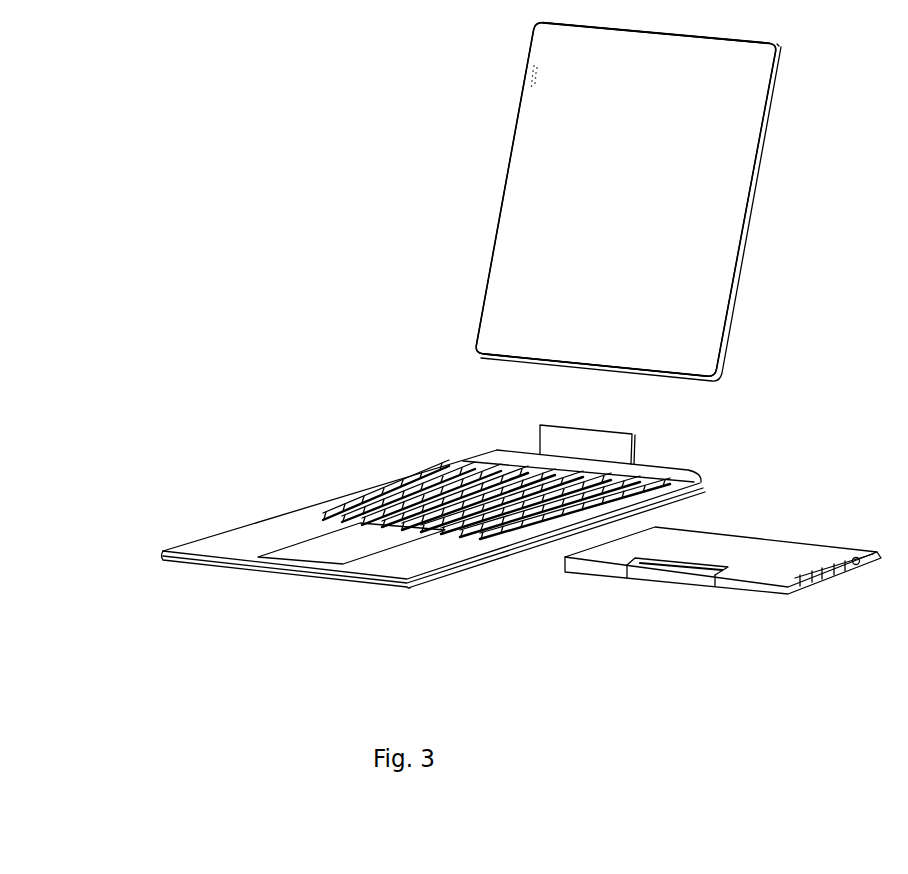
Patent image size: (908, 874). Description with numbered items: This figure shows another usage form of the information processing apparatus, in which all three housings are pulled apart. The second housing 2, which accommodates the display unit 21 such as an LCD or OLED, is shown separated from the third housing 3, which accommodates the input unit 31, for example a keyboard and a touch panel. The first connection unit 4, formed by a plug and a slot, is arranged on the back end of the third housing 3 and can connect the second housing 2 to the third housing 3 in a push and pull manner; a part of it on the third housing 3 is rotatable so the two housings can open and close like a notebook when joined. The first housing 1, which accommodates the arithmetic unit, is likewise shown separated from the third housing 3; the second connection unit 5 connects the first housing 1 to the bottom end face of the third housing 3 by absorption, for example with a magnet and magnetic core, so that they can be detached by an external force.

The first housing 1 is at (727, 576).
The second housing 2 is at (747, 253).
The display unit 21 is at (523, 212).
The third housing 3 is at (469, 494).
The input unit 31 is at (400, 497).
The first connection unit 4 is at (634, 443).
The second connection unit 5 is at (673, 584).